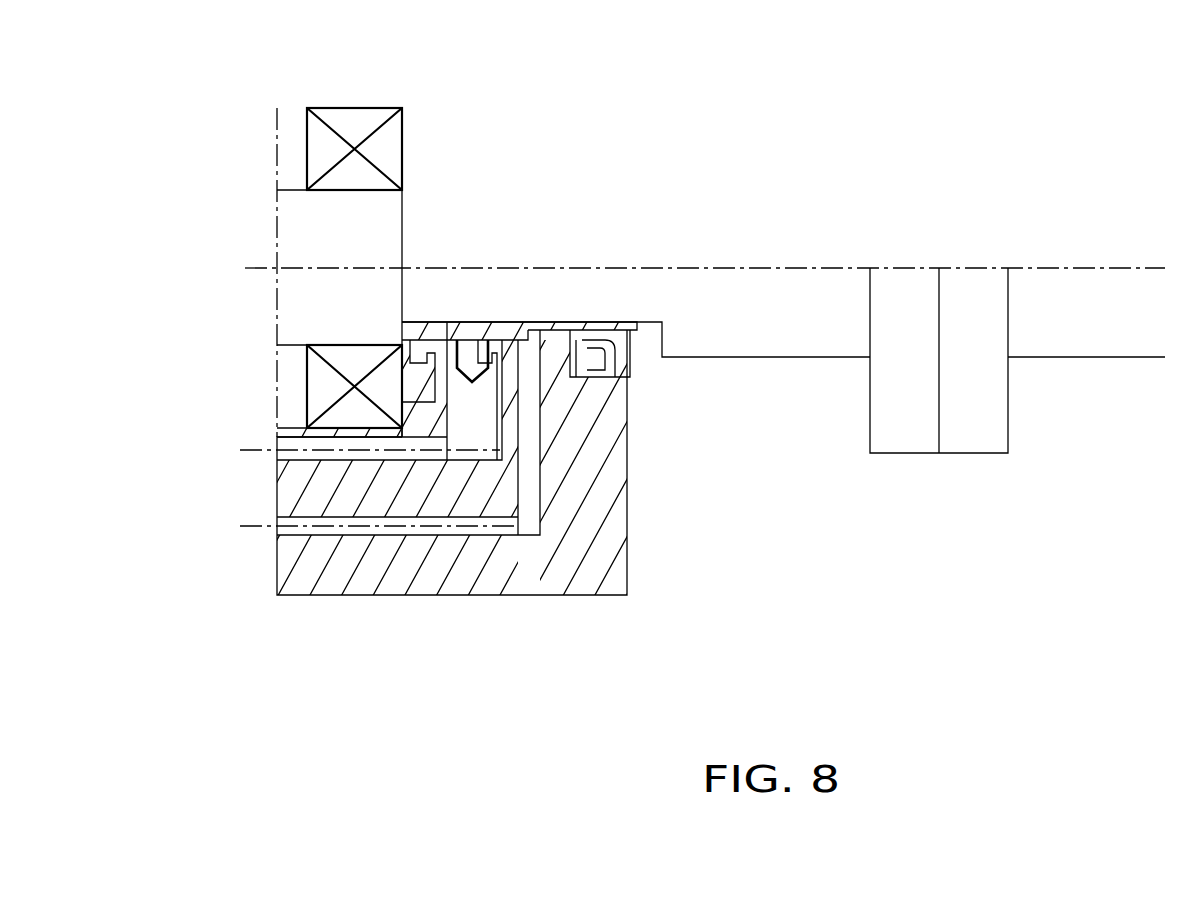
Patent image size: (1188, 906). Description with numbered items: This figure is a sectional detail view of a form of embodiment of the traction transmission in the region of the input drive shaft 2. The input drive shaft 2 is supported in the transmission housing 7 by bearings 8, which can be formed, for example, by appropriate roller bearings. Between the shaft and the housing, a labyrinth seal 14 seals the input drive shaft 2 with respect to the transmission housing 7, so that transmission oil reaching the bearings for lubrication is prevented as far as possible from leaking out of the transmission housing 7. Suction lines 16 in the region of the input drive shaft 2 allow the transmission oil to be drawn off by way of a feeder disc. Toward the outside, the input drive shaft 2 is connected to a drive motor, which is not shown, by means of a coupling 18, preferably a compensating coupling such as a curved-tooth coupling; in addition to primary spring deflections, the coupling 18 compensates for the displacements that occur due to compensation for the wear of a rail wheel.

The input drive shaft 2 is at (505, 287).
The transmission housing 7 is at (377, 565).
The bearings 8 is at (350, 120).
The labyrinth seal 14 is at (600, 375).
The suction lines 16 is at (163, 451).
The coupling 18 is at (827, 333).